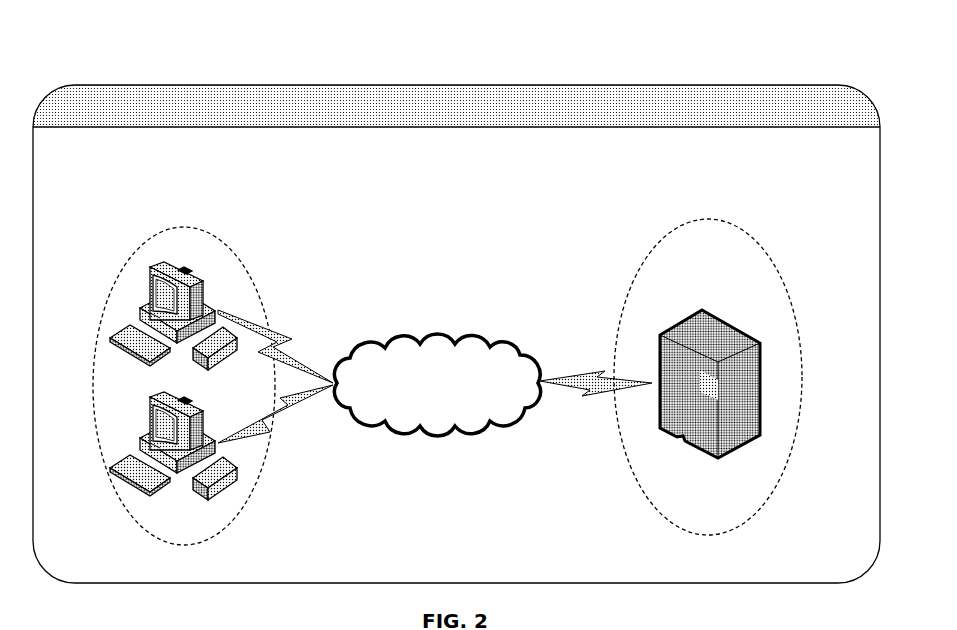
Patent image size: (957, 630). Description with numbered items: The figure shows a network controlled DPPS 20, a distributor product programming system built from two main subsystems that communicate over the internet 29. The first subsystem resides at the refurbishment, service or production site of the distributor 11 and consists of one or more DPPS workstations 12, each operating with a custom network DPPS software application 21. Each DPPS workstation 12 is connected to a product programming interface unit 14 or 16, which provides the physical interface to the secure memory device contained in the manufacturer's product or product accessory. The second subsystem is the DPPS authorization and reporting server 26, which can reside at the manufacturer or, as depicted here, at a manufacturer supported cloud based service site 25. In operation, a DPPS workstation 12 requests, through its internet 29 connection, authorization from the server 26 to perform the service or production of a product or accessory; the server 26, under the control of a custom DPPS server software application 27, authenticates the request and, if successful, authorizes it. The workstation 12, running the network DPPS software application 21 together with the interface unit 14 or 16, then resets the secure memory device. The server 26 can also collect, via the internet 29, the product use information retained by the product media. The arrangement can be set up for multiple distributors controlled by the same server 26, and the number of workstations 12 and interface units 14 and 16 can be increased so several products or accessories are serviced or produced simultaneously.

The network controlled DPPS 20 is at (332, 86).
The distributor 11 is at (187, 226).
The DPPS workstation 12 is at (148, 275).
The custom network DPPS software application 21 is at (163, 327).
The product programming interface unit 14 is at (193, 363).
The product programming interface unit 16 is at (197, 498).
The internet 29 is at (437, 340).
The manufacturer supported cloud based service site 25 is at (708, 218).
The DPPS authorization and reporting server 26 is at (730, 322).
The custom DPPS server software application 27 is at (712, 385).